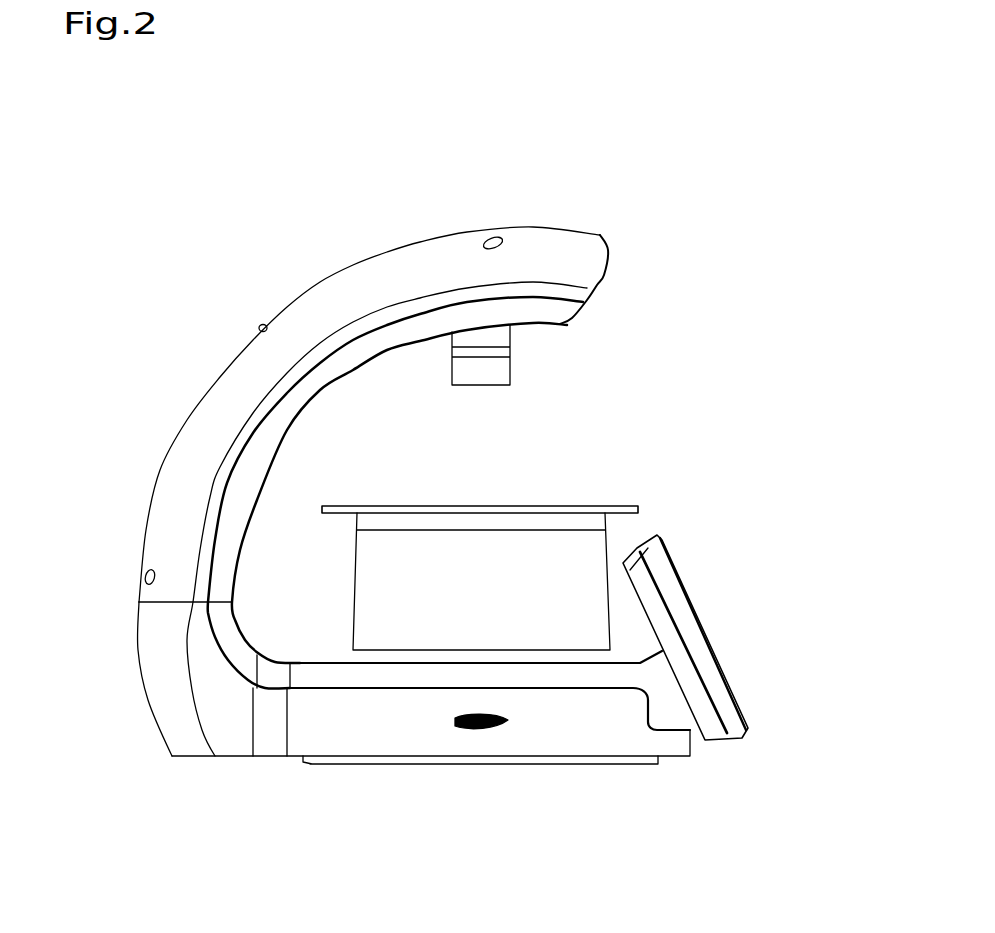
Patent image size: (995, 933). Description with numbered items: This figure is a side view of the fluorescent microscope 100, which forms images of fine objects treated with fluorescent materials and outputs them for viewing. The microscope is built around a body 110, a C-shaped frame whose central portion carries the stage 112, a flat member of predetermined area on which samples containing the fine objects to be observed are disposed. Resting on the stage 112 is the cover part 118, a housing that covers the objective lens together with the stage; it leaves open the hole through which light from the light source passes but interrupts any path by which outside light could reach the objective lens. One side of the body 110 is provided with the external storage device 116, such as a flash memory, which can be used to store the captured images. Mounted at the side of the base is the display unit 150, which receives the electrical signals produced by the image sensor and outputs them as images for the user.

The fluorescent microscope 100 is at (698, 118).
The body 110 is at (262, 235).
The stage 112 is at (583, 505).
The cover part 118 is at (572, 555).
The external storage device 116 is at (470, 730).
The display unit 150 is at (707, 650).